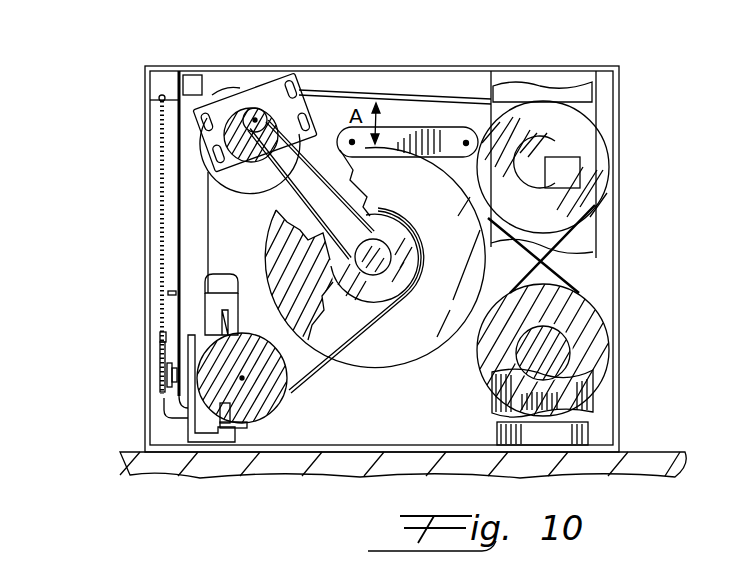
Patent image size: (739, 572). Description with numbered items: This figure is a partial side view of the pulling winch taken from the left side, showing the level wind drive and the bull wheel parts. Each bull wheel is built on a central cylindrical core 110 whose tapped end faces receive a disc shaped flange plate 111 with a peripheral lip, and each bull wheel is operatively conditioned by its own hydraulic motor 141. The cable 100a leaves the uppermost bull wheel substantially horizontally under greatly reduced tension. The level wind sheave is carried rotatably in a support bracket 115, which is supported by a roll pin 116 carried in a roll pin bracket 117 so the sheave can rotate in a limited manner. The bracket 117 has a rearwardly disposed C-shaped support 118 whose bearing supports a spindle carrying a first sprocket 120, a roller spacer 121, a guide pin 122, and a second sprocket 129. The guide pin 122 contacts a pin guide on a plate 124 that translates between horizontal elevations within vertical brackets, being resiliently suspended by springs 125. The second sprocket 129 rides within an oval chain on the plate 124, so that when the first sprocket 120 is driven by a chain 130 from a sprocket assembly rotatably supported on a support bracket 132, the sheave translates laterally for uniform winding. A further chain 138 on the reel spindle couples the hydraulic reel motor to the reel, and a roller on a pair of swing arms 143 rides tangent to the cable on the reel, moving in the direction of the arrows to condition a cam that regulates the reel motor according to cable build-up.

The cable 100a is at (330, 93).
The central cylindrical core 110 is at (553, 358).
The flange plate 111 is at (587, 320).
The support bracket 115 is at (257, 445).
The roll pin 116 is at (230, 293).
The roll pin bracket 117 is at (322, 430).
The C-shaped support 118 is at (238, 278).
The first sprocket 120 is at (190, 400).
The roller spacer 121 is at (172, 373).
The guide pin 122 is at (170, 410).
The plate 124 is at (168, 347).
The springs 125 is at (160, 140).
The second sprocket 129 is at (176, 362).
The chain 130 is at (180, 195).
The support bracket 132 is at (168, 82).
The chain 138 is at (240, 193).
The hydraulic motor 141 is at (577, 163).
The swing arms 143 is at (457, 133).